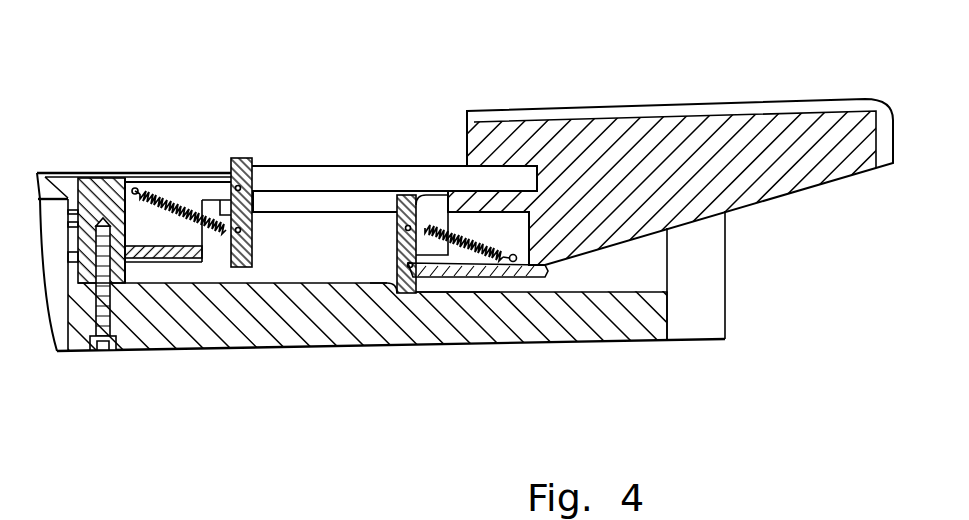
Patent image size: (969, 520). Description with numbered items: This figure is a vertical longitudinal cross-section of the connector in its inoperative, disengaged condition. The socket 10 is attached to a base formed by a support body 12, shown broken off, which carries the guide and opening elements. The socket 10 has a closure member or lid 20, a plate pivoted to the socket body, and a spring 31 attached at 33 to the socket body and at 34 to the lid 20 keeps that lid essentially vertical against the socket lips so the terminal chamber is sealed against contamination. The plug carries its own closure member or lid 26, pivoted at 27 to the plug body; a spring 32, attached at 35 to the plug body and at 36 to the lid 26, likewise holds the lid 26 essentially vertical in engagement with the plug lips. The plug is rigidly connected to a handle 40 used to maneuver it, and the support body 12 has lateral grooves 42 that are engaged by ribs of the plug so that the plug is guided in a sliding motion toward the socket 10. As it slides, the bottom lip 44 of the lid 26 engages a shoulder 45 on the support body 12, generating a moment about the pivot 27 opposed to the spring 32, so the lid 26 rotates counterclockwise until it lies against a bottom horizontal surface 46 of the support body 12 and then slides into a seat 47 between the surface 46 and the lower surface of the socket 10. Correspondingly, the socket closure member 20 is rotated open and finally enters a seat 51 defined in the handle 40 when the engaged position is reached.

The socket 10 is at (150, 332).
The support body 12 is at (82, 357).
The closure member or lid 20 is at (253, 263).
The closure member or lid 26 is at (398, 243).
The pivot 27 is at (415, 285).
The spring 31 is at (182, 205).
The spring 32 is at (432, 225).
The attachment point of spring 31 to socket body 33 is at (134, 182).
The attachment point of spring 31 to lid 20 34 is at (255, 195).
The attachment point of spring 32 to plug body 35 is at (536, 263).
The attachment point of spring 32 to lid 26 36 is at (398, 217).
The handle 40 is at (688, 103).
The lateral grooves 42 is at (298, 207).
The bottom lip 44 is at (414, 285).
The shoulder 45 is at (390, 282).
The bottom horizontal surface 46 is at (238, 285).
The seat 47 is at (184, 272).
The seat 51 is at (485, 180).